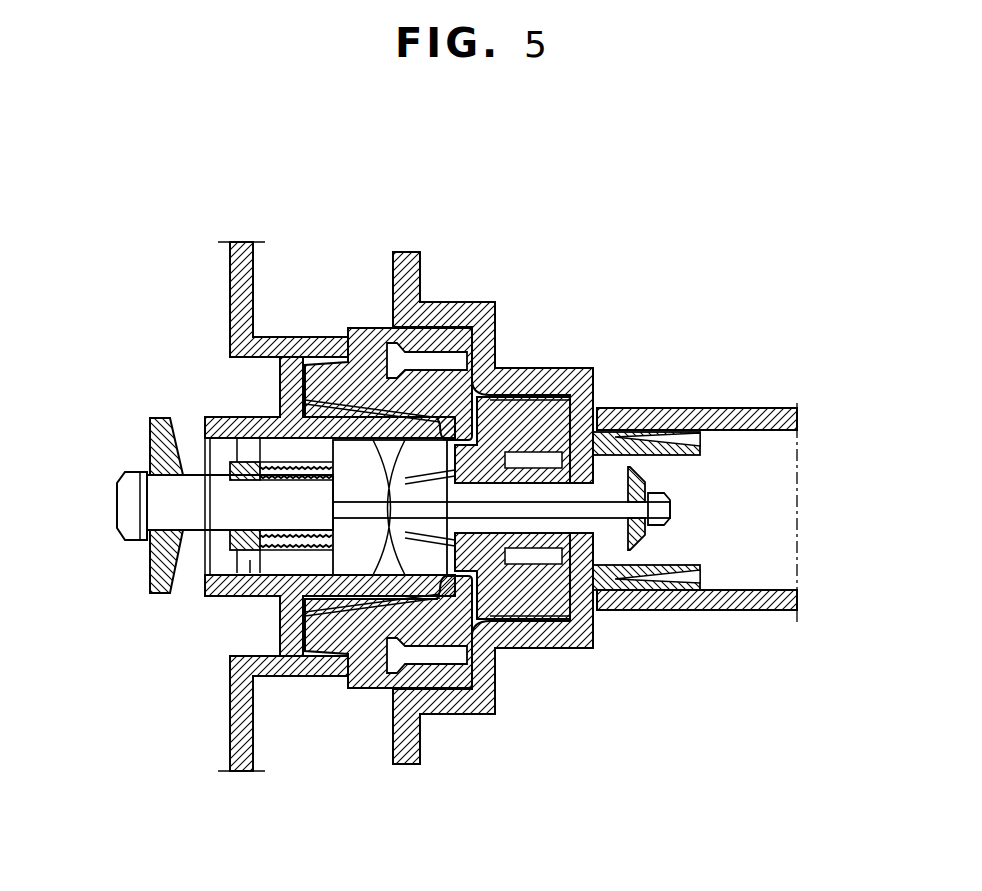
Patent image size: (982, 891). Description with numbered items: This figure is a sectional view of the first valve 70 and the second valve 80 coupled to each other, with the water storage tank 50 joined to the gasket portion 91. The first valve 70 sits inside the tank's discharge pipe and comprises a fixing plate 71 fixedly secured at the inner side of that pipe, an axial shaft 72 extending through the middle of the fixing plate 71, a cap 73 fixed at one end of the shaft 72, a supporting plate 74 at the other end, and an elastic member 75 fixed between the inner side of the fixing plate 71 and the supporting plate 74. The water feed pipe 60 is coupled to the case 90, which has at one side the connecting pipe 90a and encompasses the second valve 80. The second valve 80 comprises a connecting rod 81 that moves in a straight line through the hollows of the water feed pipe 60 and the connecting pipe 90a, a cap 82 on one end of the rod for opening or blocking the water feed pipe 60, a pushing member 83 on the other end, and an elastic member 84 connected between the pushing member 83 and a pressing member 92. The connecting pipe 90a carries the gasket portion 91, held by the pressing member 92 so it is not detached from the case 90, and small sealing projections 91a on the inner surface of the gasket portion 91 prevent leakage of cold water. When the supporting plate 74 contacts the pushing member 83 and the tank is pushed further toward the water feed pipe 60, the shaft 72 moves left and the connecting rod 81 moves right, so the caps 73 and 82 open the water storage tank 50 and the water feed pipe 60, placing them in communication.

The water storage tank 50 is at (226, 292).
The water feed pipe 60 is at (732, 406).
The first valve 70 is at (124, 544).
The fixing plate 71 is at (245, 590).
The axial shaft 72 is at (160, 592).
The cap 73 is at (140, 470).
The supporting plate 74 is at (278, 415).
The elastic member 75 is at (358, 452).
The second valve 80 is at (686, 500).
The connecting rod 81 is at (645, 520).
The cap 82 is at (797, 600).
The pushing member 83 is at (593, 368).
The elastic member 84 is at (474, 330).
The case 90 is at (480, 718).
The connecting pipe 90a is at (593, 640).
The gasket portion 91 is at (367, 676).
The sealing projections 91a is at (355, 607).
The pressing member 92 is at (487, 700).